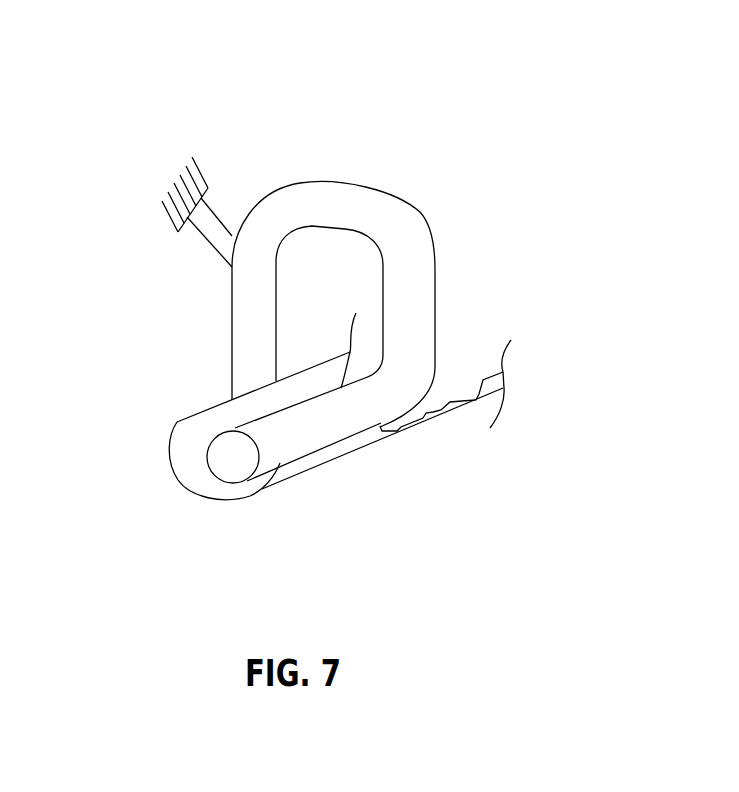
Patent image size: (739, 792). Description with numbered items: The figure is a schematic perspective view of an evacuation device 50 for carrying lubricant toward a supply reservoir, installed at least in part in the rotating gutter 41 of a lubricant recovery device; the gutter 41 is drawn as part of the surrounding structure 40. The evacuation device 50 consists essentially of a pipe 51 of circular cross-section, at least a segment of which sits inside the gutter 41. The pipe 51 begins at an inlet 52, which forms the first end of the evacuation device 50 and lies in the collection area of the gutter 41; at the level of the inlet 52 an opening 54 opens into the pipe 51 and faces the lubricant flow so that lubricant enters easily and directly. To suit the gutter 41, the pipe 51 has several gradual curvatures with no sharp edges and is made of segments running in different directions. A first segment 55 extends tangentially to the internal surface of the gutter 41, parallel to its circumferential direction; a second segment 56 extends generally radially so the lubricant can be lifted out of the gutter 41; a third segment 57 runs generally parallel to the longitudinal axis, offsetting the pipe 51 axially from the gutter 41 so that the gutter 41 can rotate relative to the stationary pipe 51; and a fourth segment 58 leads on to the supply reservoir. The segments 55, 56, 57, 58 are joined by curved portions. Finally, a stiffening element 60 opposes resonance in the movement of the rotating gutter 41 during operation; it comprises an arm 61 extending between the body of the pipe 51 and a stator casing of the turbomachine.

The mounting plate 40 is at (386, 455).
The gutter 41 is at (295, 467).
The evacuation device 50 is at (315, 359).
The pipe 51 is at (413, 245).
The inlet 52 is at (235, 428).
The opening 54 is at (227, 467).
The first segment 55 is at (317, 423).
The second segment 56 is at (420, 323).
The third segment 57 is at (348, 210).
The fourth segment 58 is at (248, 328).
The stiffening element 60 is at (223, 206).
The arm 61 is at (222, 237).